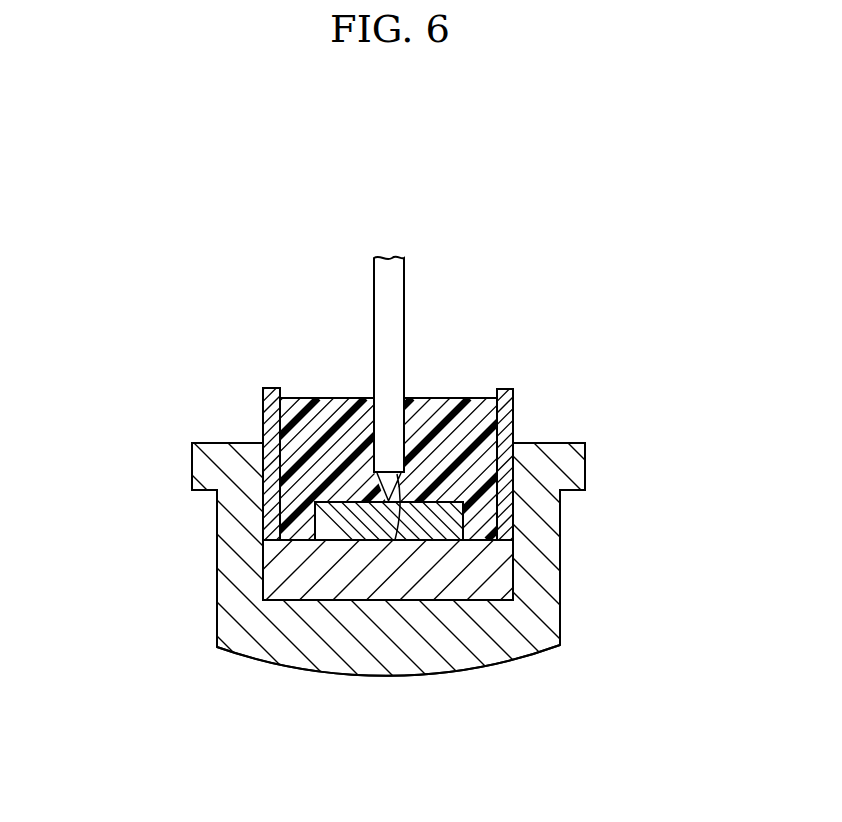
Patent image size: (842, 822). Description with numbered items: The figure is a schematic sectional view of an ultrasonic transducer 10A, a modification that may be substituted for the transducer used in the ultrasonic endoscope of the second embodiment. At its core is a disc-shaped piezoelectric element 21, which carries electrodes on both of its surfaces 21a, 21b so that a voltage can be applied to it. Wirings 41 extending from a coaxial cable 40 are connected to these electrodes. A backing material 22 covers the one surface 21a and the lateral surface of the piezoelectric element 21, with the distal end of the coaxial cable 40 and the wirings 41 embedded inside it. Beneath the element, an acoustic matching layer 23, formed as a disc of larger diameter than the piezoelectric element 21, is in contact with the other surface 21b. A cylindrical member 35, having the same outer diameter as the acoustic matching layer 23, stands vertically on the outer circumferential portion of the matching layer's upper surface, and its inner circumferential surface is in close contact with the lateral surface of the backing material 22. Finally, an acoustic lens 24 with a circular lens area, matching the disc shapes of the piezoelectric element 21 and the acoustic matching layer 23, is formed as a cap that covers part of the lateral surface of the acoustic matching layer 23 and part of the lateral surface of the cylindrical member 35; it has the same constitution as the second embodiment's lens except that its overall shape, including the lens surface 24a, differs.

The ultrasonic transducer 10A is at (446, 196).
The piezoelectric element 21 is at (329, 624).
The one surface of the piezoelectric element 21a is at (321, 488).
The other surface of the piezoelectric element 21b is at (333, 541).
The backing material 22 is at (307, 425).
The acoustic matching layer 23 is at (327, 587).
The acoustic lens 24 is at (431, 604).
The lens surface 24a is at (442, 677).
The cylindrical member 35 is at (265, 398).
The coaxial cable 40 is at (395, 278).
The wirings 41 is at (372, 483).